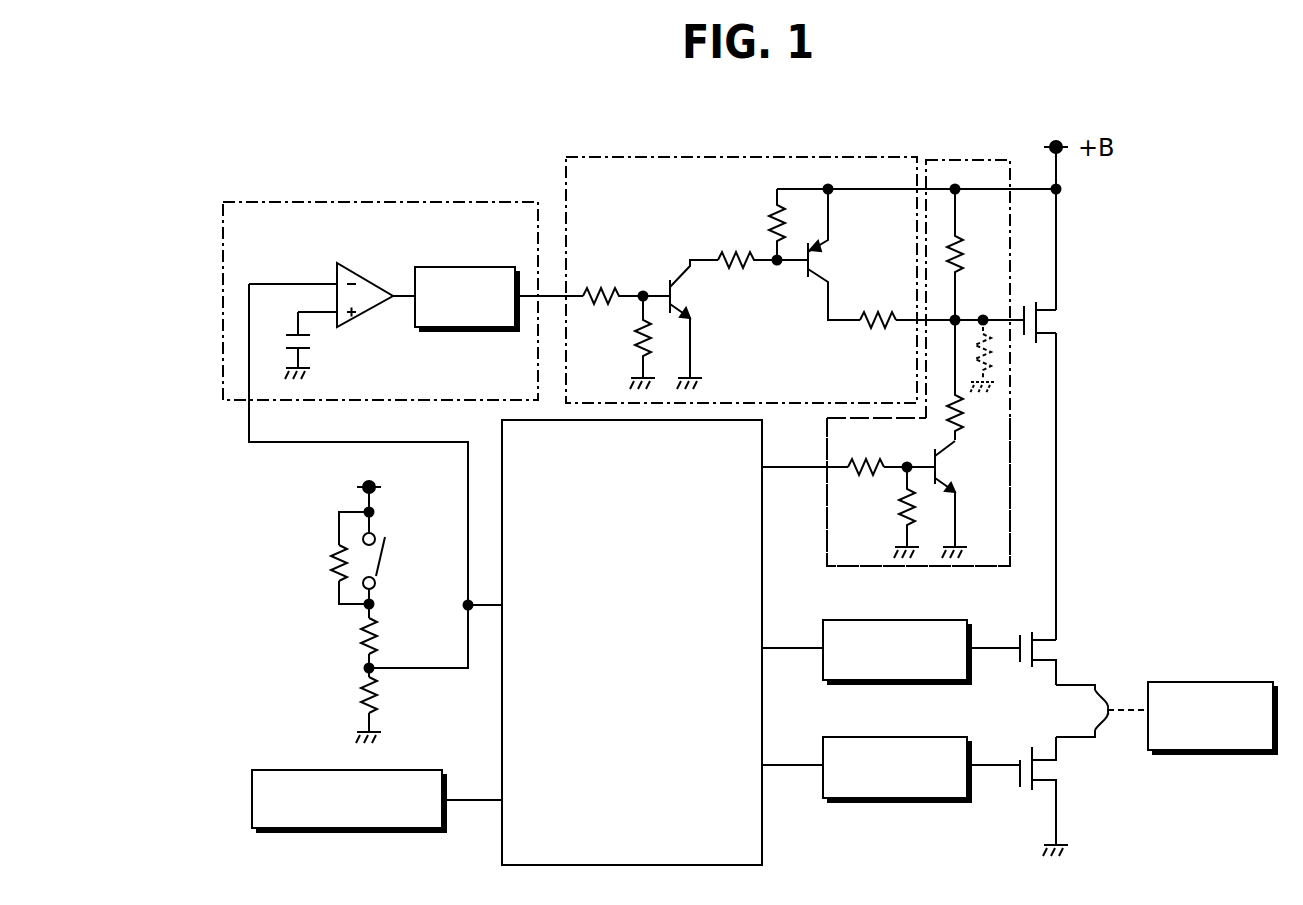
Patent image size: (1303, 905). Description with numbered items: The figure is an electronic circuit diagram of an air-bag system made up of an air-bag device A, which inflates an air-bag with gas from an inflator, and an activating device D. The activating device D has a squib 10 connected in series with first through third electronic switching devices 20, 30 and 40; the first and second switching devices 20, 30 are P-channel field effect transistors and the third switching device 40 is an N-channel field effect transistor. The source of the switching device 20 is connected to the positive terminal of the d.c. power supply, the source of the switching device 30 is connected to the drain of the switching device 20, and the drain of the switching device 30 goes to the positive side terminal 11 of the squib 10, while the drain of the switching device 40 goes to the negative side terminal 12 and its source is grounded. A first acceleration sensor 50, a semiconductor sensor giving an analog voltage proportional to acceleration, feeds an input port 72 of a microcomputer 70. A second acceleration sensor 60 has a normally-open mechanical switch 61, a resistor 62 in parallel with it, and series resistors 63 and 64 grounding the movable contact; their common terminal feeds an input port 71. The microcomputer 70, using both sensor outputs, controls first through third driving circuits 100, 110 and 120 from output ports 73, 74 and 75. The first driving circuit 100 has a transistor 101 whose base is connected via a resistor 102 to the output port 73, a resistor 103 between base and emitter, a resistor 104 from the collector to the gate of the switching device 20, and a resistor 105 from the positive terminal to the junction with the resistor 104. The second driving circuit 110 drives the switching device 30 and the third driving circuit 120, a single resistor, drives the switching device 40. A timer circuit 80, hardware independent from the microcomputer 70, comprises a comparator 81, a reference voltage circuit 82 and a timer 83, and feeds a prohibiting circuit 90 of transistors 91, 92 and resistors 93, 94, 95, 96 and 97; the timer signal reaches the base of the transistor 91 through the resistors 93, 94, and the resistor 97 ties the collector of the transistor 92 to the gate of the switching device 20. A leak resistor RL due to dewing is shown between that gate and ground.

The squib 10 is at (1103, 688).
The positive side terminal of the squib 11 is at (1060, 688).
The negative side terminal of the squib 12 is at (1060, 736).
The first electronic switching device 20 is at (1046, 322).
The second electronic switching device 30 is at (1052, 648).
The third electronic switching device 40 is at (1050, 773).
The first acceleration sensor 50 is at (270, 770).
The second acceleration sensor 60 is at (305, 610).
The mechanical switch 61 is at (387, 562).
The resistor 62 is at (333, 562).
The resistor 63 is at (362, 640).
The resistor 64 is at (362, 695).
The microcomputer 70 is at (700, 868).
The input port 71 is at (503, 606).
The input port 72 is at (490, 801).
The output port 73 is at (784, 467).
The output port 74 is at (771, 649).
The output port 75 is at (771, 766).
The timer circuit 80 is at (378, 200).
The comparator 81 is at (368, 283).
The reference voltage circuit 82 is at (313, 342).
The timer 83 is at (488, 330).
The prohibiting circuit 90 is at (750, 157).
The transistor 91 is at (688, 303).
The transistor 92 is at (831, 265).
The resistor 93 is at (614, 288).
The resistor 94 is at (636, 342).
The resistor 95 is at (718, 254).
The resistor 96 is at (772, 212).
The resistor 97 is at (875, 335).
The first driving circuit 100 is at (1017, 480).
The transistor 101 is at (955, 478).
The resistor 102 is at (845, 486).
The resistor 103 is at (900, 516).
The resistor 104 is at (965, 418).
The resistor 105 is at (962, 252).
The second driving circuit 110 is at (828, 618).
The third driving circuit 120 is at (828, 736).
The leak resistor RL is at (998, 352).
The activating device D is at (960, 135).
The air-bag device A is at (1228, 668).